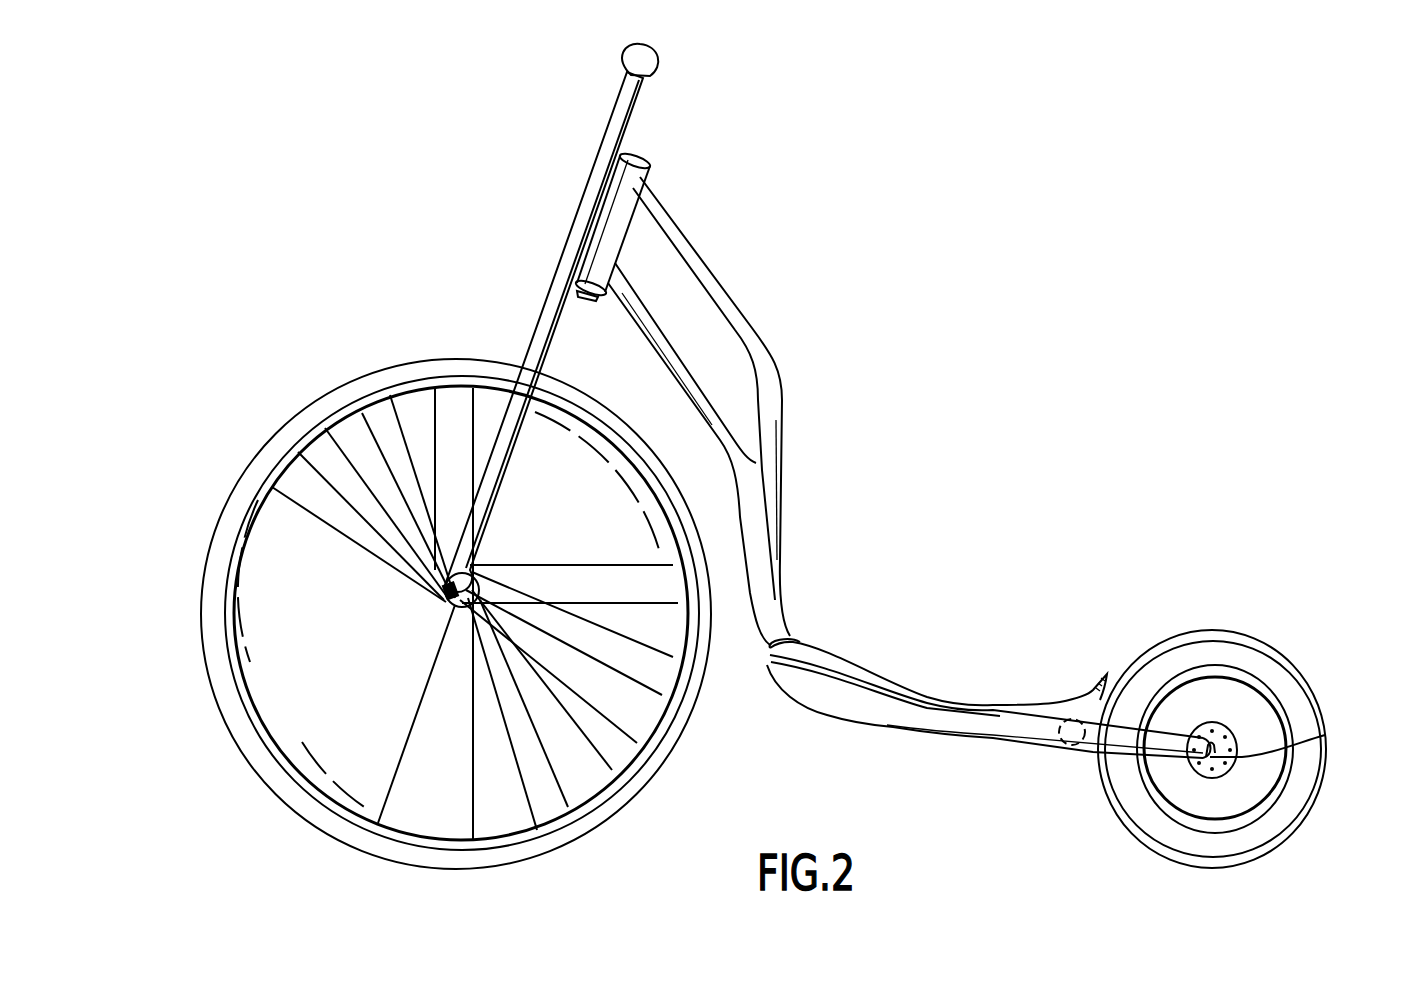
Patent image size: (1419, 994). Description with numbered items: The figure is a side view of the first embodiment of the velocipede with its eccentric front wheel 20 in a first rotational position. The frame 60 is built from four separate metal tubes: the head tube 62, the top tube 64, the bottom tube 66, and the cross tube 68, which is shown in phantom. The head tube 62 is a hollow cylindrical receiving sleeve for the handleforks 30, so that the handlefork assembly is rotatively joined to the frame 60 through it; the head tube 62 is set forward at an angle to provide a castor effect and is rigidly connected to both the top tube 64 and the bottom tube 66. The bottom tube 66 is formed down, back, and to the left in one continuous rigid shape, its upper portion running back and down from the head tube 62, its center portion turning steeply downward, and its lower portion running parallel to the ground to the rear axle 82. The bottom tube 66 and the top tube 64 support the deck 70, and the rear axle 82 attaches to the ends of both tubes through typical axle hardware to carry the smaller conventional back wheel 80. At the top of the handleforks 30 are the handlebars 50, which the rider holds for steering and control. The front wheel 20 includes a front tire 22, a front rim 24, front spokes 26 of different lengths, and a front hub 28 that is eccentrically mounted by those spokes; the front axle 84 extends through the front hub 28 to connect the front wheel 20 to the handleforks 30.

The front wheel 20 is at (300, 684).
The front tire 22 is at (326, 395).
The front rim 24 is at (247, 533).
The front spokes 26 is at (397, 763).
The front hub 28 is at (440, 605).
The handleforks 30 is at (535, 340).
The handlebars 50 is at (660, 66).
The velocipede frame 60 is at (712, 349).
The head tube 62 is at (622, 237).
The top tube 64 is at (765, 318).
The bottom tube 66 is at (668, 392).
The cross tube 68 is at (1066, 748).
The deck 70 is at (853, 673).
The back wheel 80 is at (1247, 631).
The rear axle 82 is at (1325, 735).
The front axle 84 is at (447, 618).